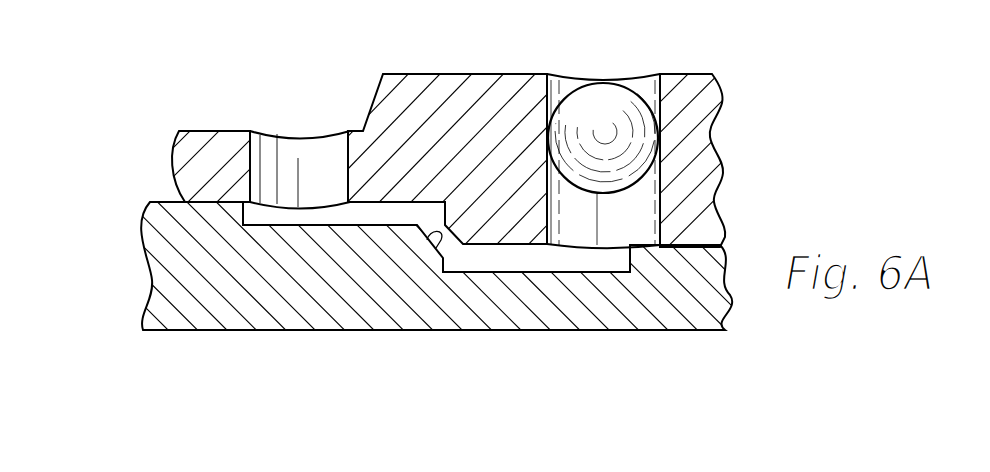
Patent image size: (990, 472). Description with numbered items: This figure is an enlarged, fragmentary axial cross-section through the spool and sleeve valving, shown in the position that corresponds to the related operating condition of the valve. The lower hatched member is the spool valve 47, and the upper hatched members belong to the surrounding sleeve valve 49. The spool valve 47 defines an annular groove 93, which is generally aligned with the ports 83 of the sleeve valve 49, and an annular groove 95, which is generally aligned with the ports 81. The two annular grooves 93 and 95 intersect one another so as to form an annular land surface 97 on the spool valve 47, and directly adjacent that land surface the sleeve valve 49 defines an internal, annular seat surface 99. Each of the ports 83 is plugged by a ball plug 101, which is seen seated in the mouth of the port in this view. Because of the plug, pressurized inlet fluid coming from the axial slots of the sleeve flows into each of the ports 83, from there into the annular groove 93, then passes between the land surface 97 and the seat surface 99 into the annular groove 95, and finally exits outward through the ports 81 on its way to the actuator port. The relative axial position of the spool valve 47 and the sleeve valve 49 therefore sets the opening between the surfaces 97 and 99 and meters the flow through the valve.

The spool valve 47 is at (167, 283).
The sleeve valve 49 is at (200, 170).
The ports 81 is at (307, 150).
The ports 83 is at (612, 221).
The annular groove 93 is at (557, 262).
The annular groove 95 is at (292, 215).
The annular land surface 97 is at (436, 235).
The annular seat surface 99 is at (473, 223).
The ball plug 101 is at (617, 118).